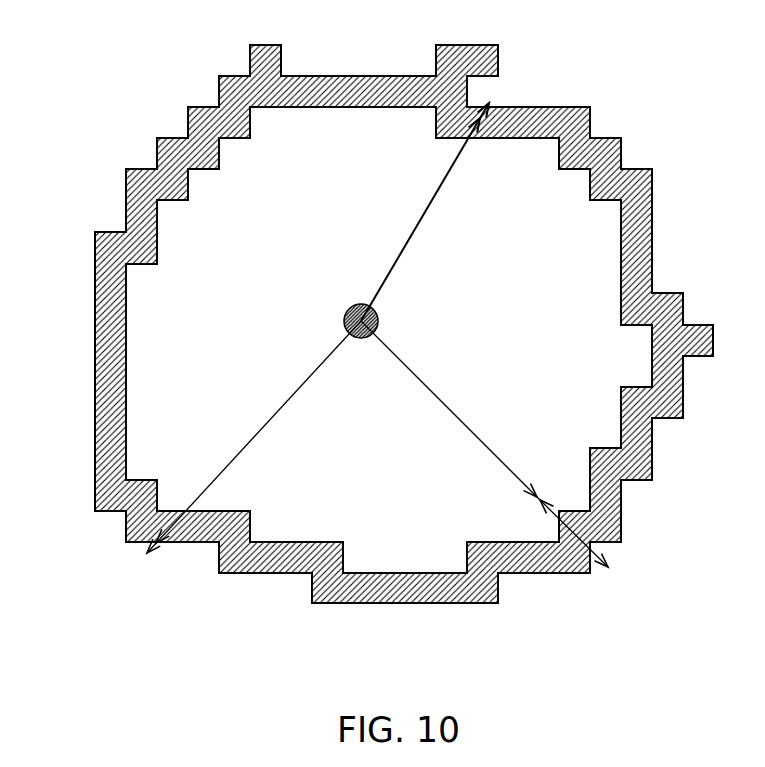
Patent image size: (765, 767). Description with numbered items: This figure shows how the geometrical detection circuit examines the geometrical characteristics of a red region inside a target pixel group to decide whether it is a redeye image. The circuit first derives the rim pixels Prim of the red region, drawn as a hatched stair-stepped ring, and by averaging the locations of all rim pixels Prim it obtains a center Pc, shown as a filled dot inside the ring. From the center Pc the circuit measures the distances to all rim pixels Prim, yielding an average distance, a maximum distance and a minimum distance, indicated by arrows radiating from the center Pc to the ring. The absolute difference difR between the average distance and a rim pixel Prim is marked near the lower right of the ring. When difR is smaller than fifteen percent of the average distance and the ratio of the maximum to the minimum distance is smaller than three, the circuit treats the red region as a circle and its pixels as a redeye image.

The rim pixels Prim is at (95, 418).
The center Pc is at (348, 311).
The absolute difference difR is at (600, 536).